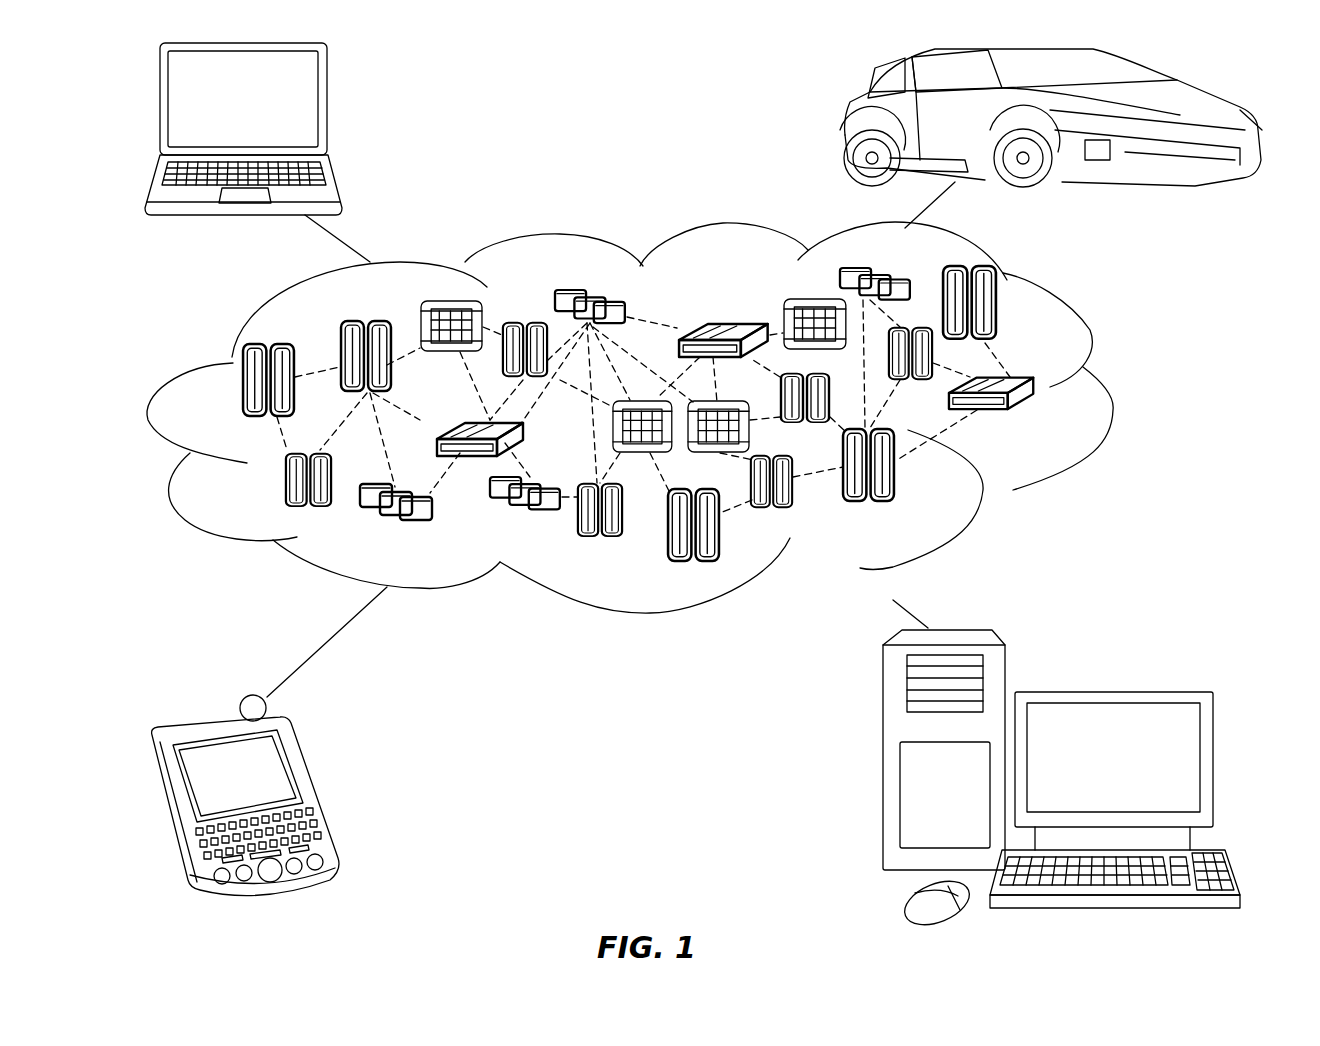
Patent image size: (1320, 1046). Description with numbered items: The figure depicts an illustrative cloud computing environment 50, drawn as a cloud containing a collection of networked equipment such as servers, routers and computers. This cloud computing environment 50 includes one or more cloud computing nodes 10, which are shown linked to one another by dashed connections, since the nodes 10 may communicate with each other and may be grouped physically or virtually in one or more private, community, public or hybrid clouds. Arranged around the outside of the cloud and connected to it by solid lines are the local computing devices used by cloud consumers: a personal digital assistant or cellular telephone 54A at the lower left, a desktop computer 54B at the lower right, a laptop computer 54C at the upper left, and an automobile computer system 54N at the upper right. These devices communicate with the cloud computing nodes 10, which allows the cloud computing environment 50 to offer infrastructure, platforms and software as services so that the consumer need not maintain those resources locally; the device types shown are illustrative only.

The cloud computing nodes 10 is at (1101, 451).
The cloud computing environment 50 is at (1113, 390).
The personal digital assistant (PDA) or cellular telephone 54A is at (312, 792).
The desktop computer 54B is at (1108, 692).
The laptop computer 54C is at (327, 110).
The automobile computer system 54N is at (849, 123).